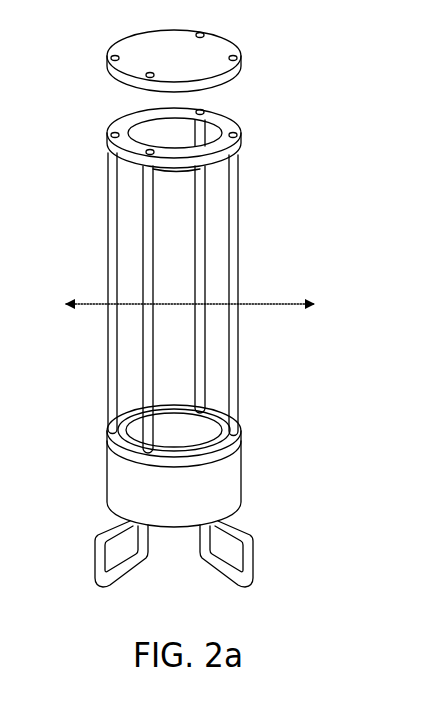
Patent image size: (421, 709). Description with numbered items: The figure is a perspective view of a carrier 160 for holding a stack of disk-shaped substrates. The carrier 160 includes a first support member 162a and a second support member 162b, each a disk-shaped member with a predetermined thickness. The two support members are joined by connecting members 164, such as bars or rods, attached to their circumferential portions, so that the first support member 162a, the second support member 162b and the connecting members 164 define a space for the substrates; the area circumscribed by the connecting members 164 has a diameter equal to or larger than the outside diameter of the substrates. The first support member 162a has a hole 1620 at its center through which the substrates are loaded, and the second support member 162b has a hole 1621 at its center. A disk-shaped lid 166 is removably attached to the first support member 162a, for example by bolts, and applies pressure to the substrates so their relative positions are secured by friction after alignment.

The carrier 160 is at (294, 82).
The disk-shaped lid 166 is at (240, 46).
The first support member 162a is at (196, 127).
The hole 1620 is at (133, 130).
The connecting members 164 is at (240, 238).
The second support member 162b is at (176, 478).
The hole 1621 is at (138, 423).